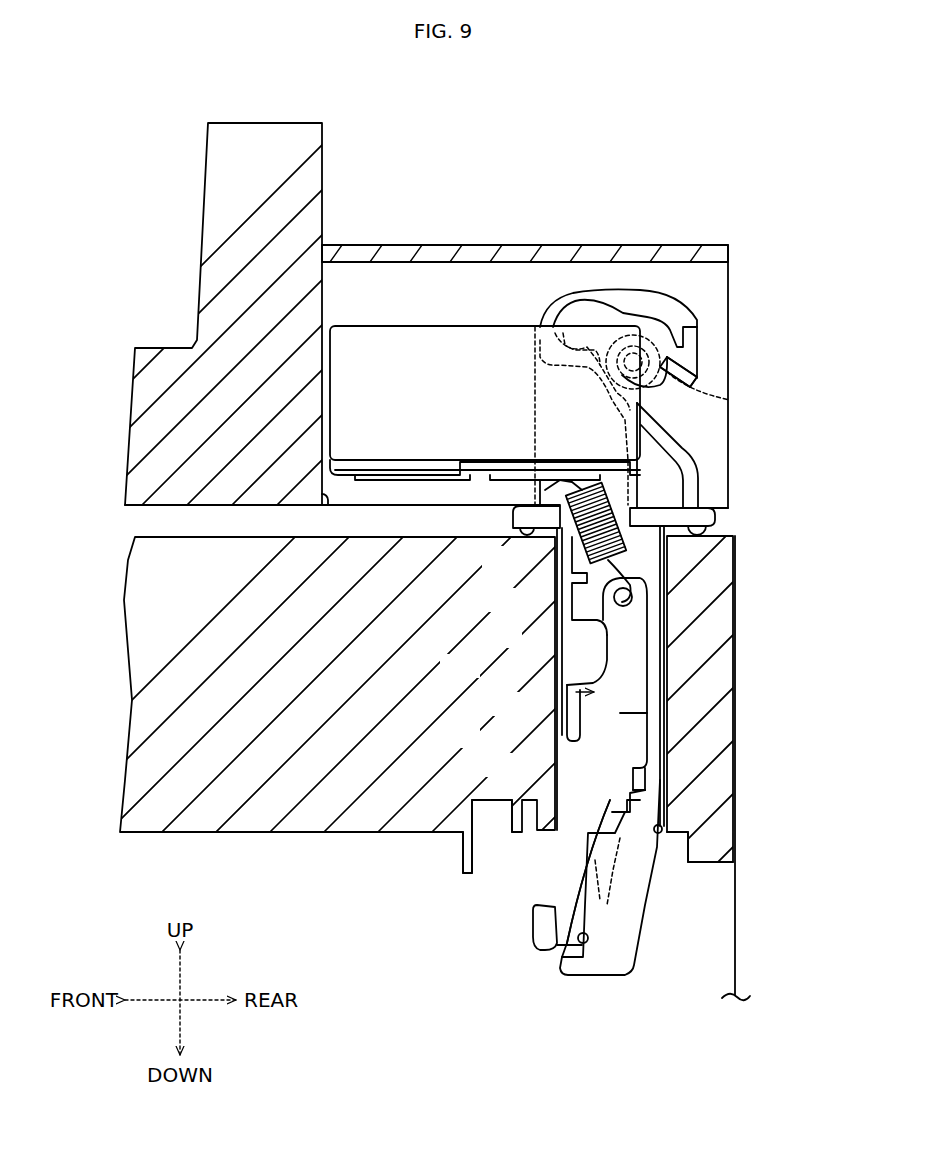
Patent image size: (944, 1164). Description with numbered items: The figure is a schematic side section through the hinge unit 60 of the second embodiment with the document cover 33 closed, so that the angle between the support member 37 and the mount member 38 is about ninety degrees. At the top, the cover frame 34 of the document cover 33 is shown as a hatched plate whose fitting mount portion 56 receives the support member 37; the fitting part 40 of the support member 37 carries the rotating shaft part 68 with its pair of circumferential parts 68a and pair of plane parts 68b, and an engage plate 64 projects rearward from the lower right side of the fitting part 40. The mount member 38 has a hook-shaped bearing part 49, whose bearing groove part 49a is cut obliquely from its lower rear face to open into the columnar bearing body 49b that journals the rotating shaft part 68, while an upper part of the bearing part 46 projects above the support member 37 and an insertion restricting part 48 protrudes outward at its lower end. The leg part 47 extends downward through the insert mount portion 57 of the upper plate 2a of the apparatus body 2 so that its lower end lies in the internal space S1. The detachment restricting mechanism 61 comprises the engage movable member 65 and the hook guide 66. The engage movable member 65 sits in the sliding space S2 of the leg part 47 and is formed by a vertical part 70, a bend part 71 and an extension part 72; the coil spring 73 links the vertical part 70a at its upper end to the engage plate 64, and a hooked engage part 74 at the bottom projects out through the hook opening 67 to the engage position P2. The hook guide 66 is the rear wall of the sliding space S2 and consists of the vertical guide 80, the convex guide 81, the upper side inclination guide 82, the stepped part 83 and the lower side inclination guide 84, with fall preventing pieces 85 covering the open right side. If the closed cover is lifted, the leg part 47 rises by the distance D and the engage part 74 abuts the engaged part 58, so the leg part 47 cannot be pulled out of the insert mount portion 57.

The apparatus body 2 is at (738, 972).
The upper plate 2a is at (130, 792).
The document cover 33 is at (152, 315).
The cover frame 34 is at (128, 404).
The support member 37 is at (497, 320).
The mount member 38 is at (715, 455).
The fitting part 40 is at (452, 325).
The bearing part 46 is at (700, 480).
The leg part 47 is at (632, 605).
The insertion restricting part 48 is at (722, 514).
The bearing part 49 is at (792, 372).
The bearing groove part 49a is at (667, 362).
The bearing body 49b is at (670, 388).
The fitting mount portion 56 is at (322, 502).
The insert mount portion 57 is at (692, 845).
The engaged part 58 is at (510, 850).
The hinge unit 60 is at (762, 305).
The detachment restricting mechanism 61 is at (775, 735).
The engage plate 64 is at (560, 505).
The engage movable member 65 is at (600, 690).
The hook guide 66 is at (650, 768).
The hook opening 67 is at (560, 745).
The rotating shaft part 68 is at (658, 207).
The circumferential part 68a is at (630, 345).
The plane part 68b is at (590, 345).
The vertical part 70 is at (610, 640).
The vertical part 70a is at (600, 600).
The bend part 71 is at (590, 735).
The extension part 72 is at (590, 810).
The coil spring 73 is at (557, 555).
The engage part 74 is at (540, 920).
The vertical guide 80 is at (650, 640).
The convex guide 81 is at (640, 790).
The upper side inclination guide 82 is at (612, 855).
The stepped part 83 is at (605, 885).
The lower side inclination guide 84 is at (590, 930).
The fall preventing piece 85 is at (640, 725).
The internal space S1 is at (148, 863).
The sliding space S2 is at (640, 560).
The engage position P2 is at (520, 948).
The distance D is at (548, 836).